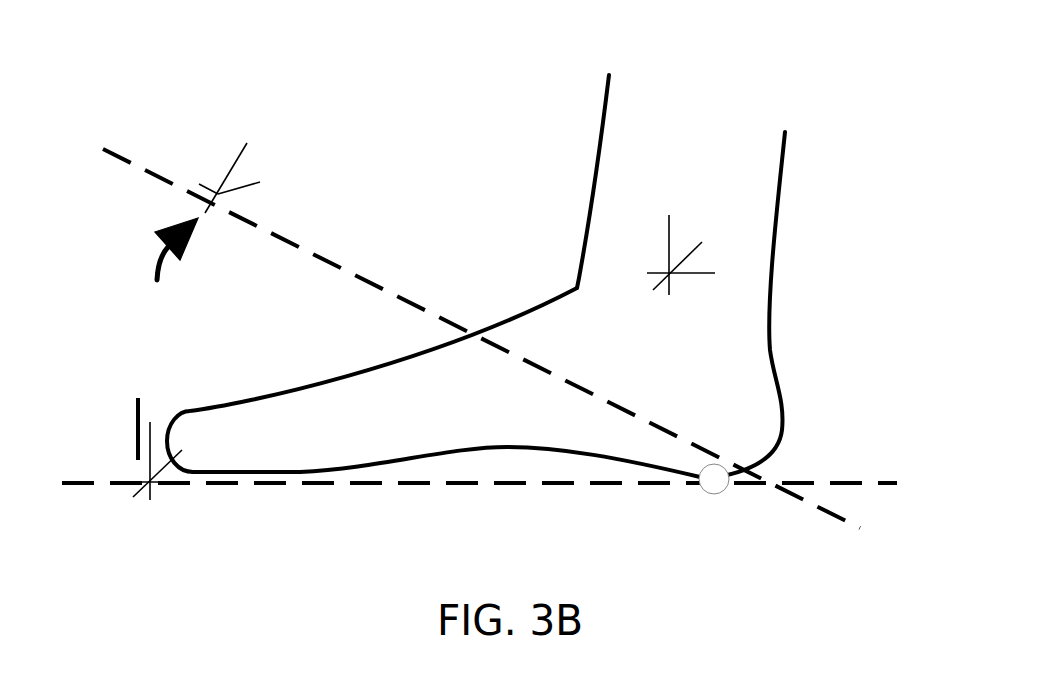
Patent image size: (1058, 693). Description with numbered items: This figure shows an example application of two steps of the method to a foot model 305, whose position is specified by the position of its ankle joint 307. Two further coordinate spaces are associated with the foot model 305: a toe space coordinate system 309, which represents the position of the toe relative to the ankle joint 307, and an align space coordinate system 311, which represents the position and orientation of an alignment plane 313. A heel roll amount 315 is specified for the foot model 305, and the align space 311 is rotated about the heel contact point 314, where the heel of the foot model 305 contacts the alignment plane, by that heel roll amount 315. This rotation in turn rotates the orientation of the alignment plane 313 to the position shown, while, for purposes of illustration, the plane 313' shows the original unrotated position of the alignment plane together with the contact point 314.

The foot model 305 is at (681, 276).
The ankle joint 307 is at (701, 274).
The toe space coordinate system 309 is at (200, 467).
The align space coordinate system 311 is at (240, 221).
The alignment plane 313 is at (418, 307).
The unrotated alignment plane 313' is at (821, 472).
The heel contact point 314 is at (717, 477).
The heel roll amount 315 is at (158, 339).